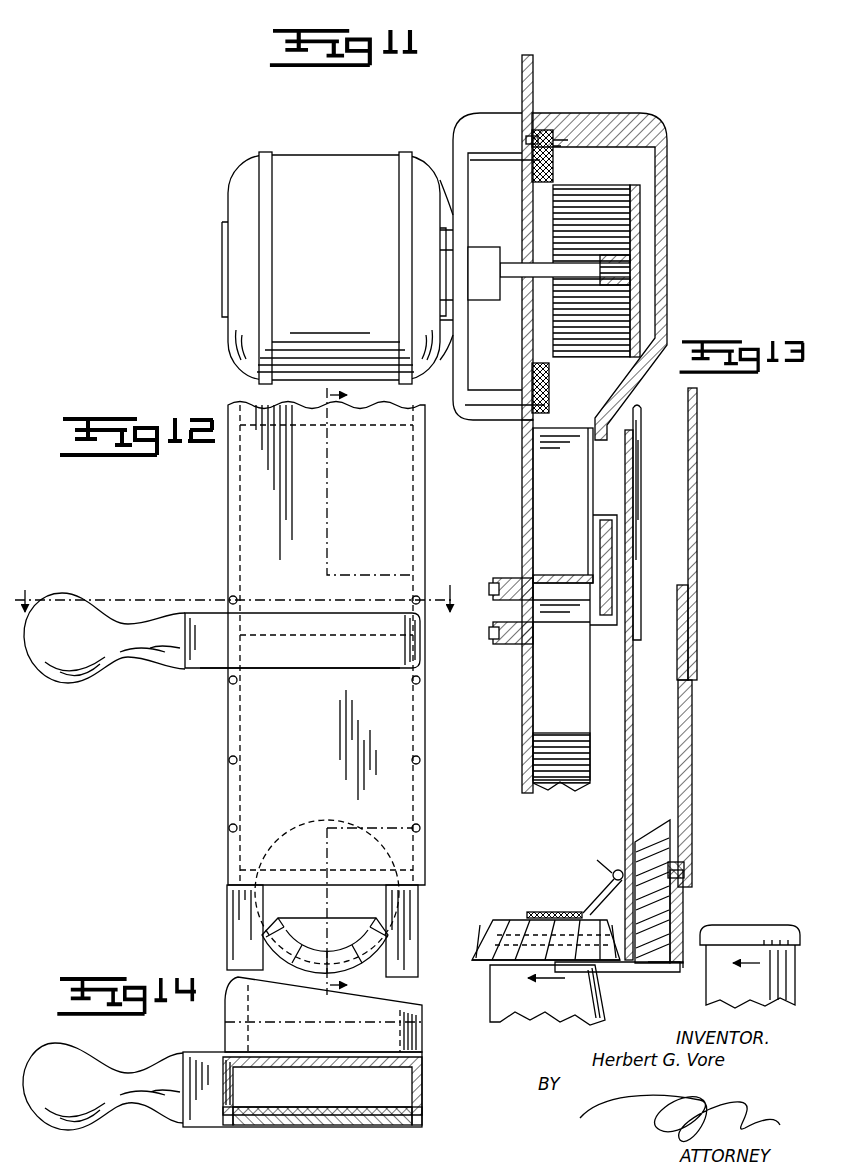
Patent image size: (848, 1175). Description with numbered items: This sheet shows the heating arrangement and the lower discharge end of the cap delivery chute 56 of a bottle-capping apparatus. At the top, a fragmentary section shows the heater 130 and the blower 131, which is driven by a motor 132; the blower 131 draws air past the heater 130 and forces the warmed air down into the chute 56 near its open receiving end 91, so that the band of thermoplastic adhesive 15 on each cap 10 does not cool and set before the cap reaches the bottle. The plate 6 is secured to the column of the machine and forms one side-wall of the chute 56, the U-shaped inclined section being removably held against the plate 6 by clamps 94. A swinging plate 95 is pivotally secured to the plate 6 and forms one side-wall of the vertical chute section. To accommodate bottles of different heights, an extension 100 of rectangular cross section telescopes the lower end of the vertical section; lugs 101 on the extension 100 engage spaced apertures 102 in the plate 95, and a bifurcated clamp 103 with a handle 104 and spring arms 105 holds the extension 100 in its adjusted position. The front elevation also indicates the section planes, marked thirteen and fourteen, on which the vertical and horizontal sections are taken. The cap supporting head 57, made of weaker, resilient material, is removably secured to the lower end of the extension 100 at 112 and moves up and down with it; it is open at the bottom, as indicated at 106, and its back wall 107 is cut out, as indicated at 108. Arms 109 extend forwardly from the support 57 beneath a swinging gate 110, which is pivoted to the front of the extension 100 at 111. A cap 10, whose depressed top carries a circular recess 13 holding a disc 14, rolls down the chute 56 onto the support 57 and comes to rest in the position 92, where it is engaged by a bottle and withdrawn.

In FIG. 11, the plate 6 is at (522, 80).
In FIG. 13, the plate 6 is at (522, 500).
In FIG. 13, the cap 10 is at (652, 838).
In FIG. 12, the cap 10 is at (356, 946).
In FIG. 12, the circular recess 13 is at (370, 690).
In FIG. 12, the disc 14 is at (238, 607).
In FIG. 13, the band of thermoplastic adhesive 15 is at (490, 962).
In FIG. 13, the chute 56 is at (698, 500).
In FIG. 12, the chute 56 is at (226, 497).
In FIG. 13, the cap supporting head 57 is at (685, 906).
In FIG. 12, the cap supporting head 57 is at (420, 911).
In FIG. 13, the open end 91 is at (566, 478).
In FIG. 13, the cap rest position 92 is at (640, 968).
In FIG. 13, the clamp 94 is at (570, 620).
In FIG. 13, the swinging plate 95 is at (692, 748).
In FIG. 13, the extension 100 is at (625, 815).
In FIG. 14, the extension 100 is at (420, 1096).
In FIG. 14, the lug 101 is at (235, 1124).
In FIG. 13, the aperture 102 is at (690, 682).
In FIG. 12, the bifurcated clamp 103 is at (200, 669).
In FIG. 14, the bifurcated clamp 103 is at (298, 1050).
In FIG. 12, the handle 104 is at (88, 690).
In FIG. 14, the handle 104 is at (88, 1128).
In FIG. 12, the spring arm 105 is at (310, 669).
In FIG. 14, the spring arm 105 is at (322, 1128).
In FIG. 13, the open bottom 106 is at (664, 968).
In FIG. 12, the back wall 107 is at (290, 900).
In FIG. 12, the cut-out 108 is at (262, 951).
In FIG. 13, the arm 109 is at (578, 968).
In FIG. 14, the arm 109 is at (233, 986).
In FIG. 13, the swinging gate 110 is at (552, 912).
In FIG. 13, the pivot 111 is at (613, 874).
In FIG. 13, the removable securing means 112 is at (684, 866).
In FIG. 11, the heater 130 is at (553, 170).
In FIG. 11, the blower 131 is at (640, 288).
In FIG. 11, the motor 132 is at (334, 268).